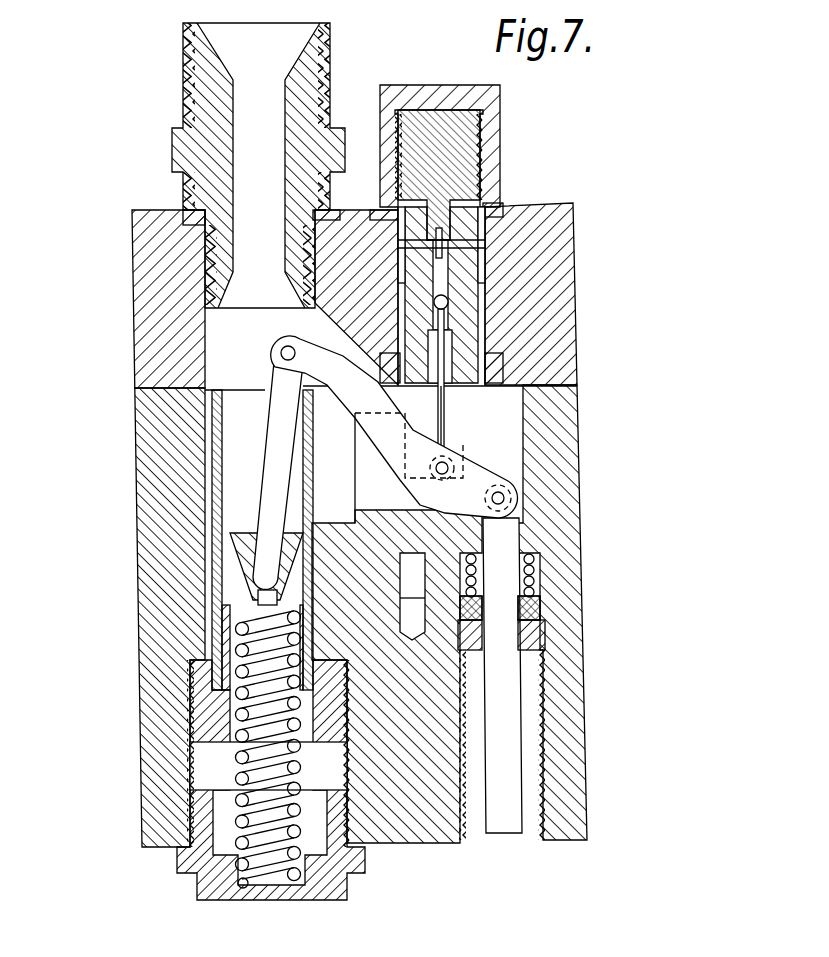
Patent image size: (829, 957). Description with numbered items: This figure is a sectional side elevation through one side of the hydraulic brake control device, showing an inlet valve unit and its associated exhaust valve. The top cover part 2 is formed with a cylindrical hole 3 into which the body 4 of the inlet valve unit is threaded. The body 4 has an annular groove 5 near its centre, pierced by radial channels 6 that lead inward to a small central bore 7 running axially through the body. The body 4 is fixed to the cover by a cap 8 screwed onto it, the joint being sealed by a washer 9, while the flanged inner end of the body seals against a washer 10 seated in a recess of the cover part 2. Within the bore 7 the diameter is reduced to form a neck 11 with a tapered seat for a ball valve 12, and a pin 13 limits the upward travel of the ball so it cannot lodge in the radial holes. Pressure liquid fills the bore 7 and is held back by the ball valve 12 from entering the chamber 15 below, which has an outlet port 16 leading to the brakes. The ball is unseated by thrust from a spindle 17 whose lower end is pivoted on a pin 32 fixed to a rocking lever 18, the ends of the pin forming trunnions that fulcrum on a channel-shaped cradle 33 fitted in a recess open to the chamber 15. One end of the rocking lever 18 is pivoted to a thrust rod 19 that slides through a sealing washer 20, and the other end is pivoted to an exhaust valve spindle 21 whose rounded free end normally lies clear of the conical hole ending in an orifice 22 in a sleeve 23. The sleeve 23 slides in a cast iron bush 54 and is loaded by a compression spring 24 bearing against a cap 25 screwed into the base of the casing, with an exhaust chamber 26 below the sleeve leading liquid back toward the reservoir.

The top cover part 2 is at (565, 362).
The cylindrical hole 3 is at (470, 350).
The body 4 is at (446, 320).
The annular groove 5 is at (476, 273).
The radial channel 6 is at (505, 222).
The central bore 7 is at (470, 256).
The cap 8 is at (405, 85).
The washer 9 is at (490, 205).
The washer 10 is at (497, 382).
The neck 11 is at (455, 336).
The ball valve 12 is at (448, 300).
The pin 13 is at (462, 153).
The chamber 15 is at (228, 328).
The outlet port 16 is at (245, 92).
The spindle 17 is at (445, 397).
The rocking lever 18 is at (387, 443).
The thrust rod 19 is at (510, 727).
The sealing washer 20 is at (530, 593).
The exhaust valve spindle 21 is at (278, 403).
The orifice 22 is at (262, 597).
The sleeve 23 is at (218, 566).
The compression spring 24 is at (238, 730).
The cap 25 is at (200, 882).
The exhaust chamber 26 is at (210, 763).
The pin 32 is at (444, 462).
The cradle 33 is at (365, 450).
The cast iron bush 54 is at (235, 617).